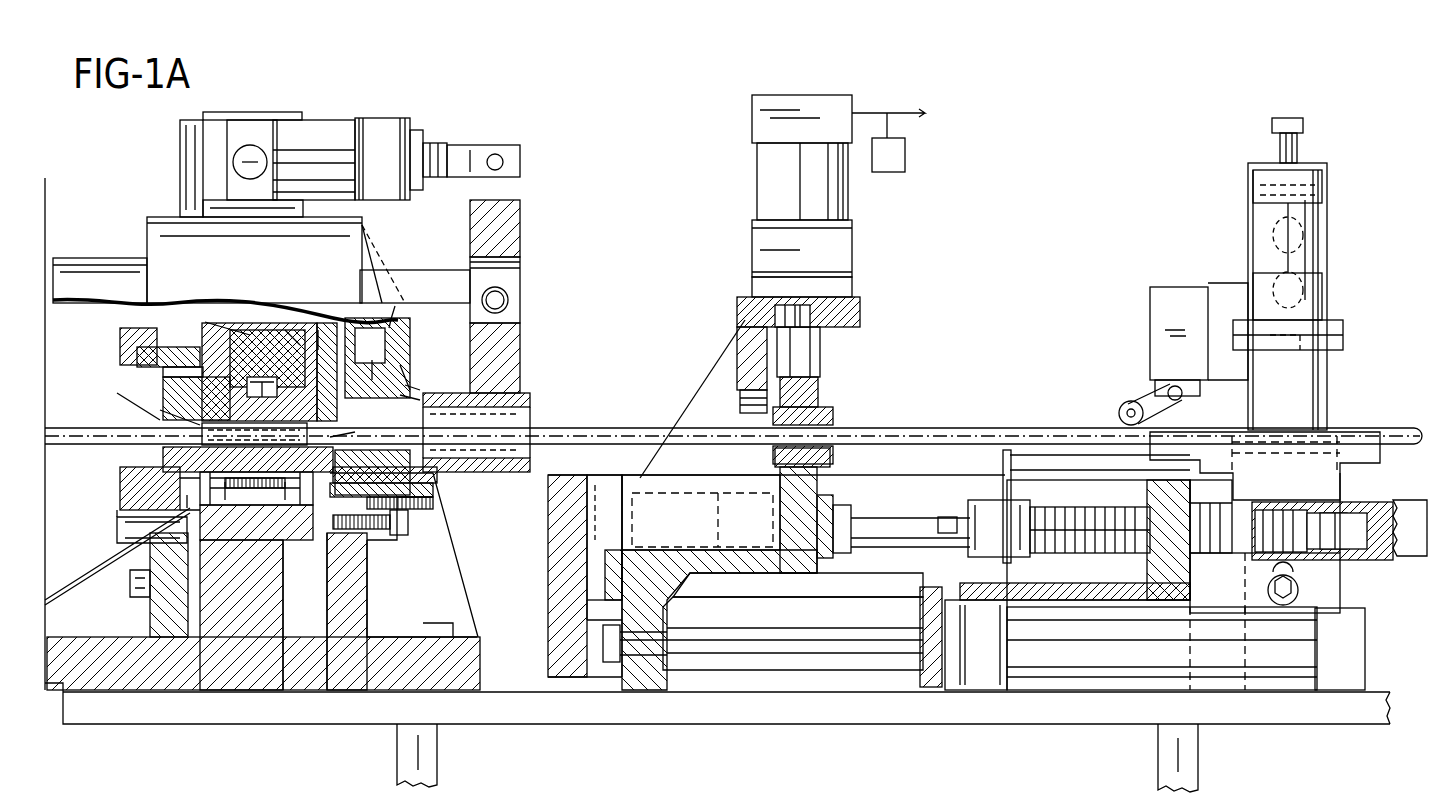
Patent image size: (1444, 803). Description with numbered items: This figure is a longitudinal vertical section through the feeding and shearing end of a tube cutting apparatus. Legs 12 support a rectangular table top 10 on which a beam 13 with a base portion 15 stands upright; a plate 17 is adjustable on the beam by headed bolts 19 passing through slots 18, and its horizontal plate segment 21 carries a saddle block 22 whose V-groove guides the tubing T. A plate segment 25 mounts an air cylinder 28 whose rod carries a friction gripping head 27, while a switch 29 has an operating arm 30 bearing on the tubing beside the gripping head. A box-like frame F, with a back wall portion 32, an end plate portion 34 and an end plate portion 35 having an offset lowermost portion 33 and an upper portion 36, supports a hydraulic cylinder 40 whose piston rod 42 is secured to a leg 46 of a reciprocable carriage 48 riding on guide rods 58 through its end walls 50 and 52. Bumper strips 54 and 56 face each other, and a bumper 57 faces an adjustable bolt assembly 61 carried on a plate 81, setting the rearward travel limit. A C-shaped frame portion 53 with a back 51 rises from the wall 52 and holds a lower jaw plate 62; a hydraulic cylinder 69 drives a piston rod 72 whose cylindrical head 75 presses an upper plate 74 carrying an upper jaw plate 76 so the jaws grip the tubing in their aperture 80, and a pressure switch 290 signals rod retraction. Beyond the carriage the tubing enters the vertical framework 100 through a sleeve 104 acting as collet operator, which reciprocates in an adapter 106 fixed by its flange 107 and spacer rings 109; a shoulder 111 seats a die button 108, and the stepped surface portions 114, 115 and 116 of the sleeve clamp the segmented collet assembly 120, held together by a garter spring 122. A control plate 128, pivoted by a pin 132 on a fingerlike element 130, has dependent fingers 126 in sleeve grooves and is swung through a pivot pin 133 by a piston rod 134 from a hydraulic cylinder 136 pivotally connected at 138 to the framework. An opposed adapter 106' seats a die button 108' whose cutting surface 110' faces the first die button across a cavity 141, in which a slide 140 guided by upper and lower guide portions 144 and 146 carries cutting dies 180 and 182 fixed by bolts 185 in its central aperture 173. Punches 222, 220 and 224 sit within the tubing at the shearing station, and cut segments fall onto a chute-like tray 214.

The table top 10 is at (1063, 712).
The legs 12 is at (438, 752).
The base portion 15 is at (1278, 690).
The tubing T is at (612, 426).
The hydraulic cylinder 136 is at (330, 144).
The pivotal connection 138 is at (250, 146).
The piston rod 134 is at (435, 147).
The pivot pin 133 is at (497, 155).
The control plate 128 is at (522, 222).
The fingerlike element 130 is at (521, 280).
The pivot pin 132 is at (510, 300).
The dependent fingers 126 is at (520, 372).
The sleeve 104 is at (525, 395).
The slide 140 is at (283, 325).
The flange 107 is at (390, 345).
The spacer rings 109 is at (411, 304).
The adapter 106' is at (225, 311).
The cutting surface 110' is at (153, 383).
The second punch 220 is at (150, 418).
The vertical framework 100 is at (368, 571).
The upper guide portion 144 is at (240, 321).
The cutting die 182 is at (218, 330).
The cutting die 180 is at (292, 340).
The recessed annular shoulder 111 is at (318, 329).
The conical wall surface portion 116 is at (372, 359).
The adapter 106 is at (428, 357).
The cylindrical surface portion 115 is at (416, 384).
The conically expanding surface portion 114 is at (410, 394).
The third punch 224 is at (306, 435).
The die button 108 is at (346, 434).
The die button 108' is at (128, 482).
The cavity 141 is at (162, 483).
The collet assembly 120 is at (434, 480).
The garter type spring 122 is at (438, 495).
The bolts 185 is at (393, 504).
The central aperture 173 is at (279, 537).
The punch 222 is at (246, 533).
The lower guide portion 146 is at (269, 615).
The chute-like tray 214 is at (78, 568).
The hydraulic cylinder 69 is at (792, 180).
The pressure switch 290 is at (905, 152).
The C-shaped frame portion 53 is at (862, 314).
The piston rod 72 is at (774, 315).
The back 51 is at (745, 337).
The cylindrical head 75 is at (818, 357).
The upper plate 74 is at (812, 392).
The aperture 80 is at (738, 409).
The upper jaw plate 76 is at (835, 414).
The lower jaw plate 62 is at (834, 456).
The end plate portion 34 is at (545, 583).
The box-like frame F is at (532, 490).
The bumper strip 54 is at (560, 570).
The bumper strip 56 is at (552, 598).
The end wall 50 is at (624, 555).
The reciprocable carriage 48 is at (795, 578).
The end wall 52 is at (782, 486).
The piston rod 42 is at (762, 640).
The leg 46 is at (653, 668).
The lowermost portion 33 is at (921, 627).
The hydraulic cylinder 40 is at (1134, 636).
The bumper 57 is at (850, 526).
The guide rods 58 is at (896, 541).
The bolt assembly 61 is at (972, 547).
The plate 81 is at (1002, 466).
The back wall portion 32 is at (876, 480).
The upper portion 36 is at (1150, 490).
The end plate portion 35 is at (1132, 580).
The saddle block 22 is at (1211, 516).
The plate 17 is at (1332, 590).
The headed bolt 19 is at (1268, 587).
The gripping head 27 is at (1306, 405).
The plate segment 21 is at (1330, 479).
The beam 13 is at (1327, 246).
The slots 18 is at (1250, 219).
The air cylinder 28 is at (1260, 250).
The plate segment 25 is at (1330, 328).
The switch 29 is at (1164, 290).
The operating arm 30 is at (1159, 412).